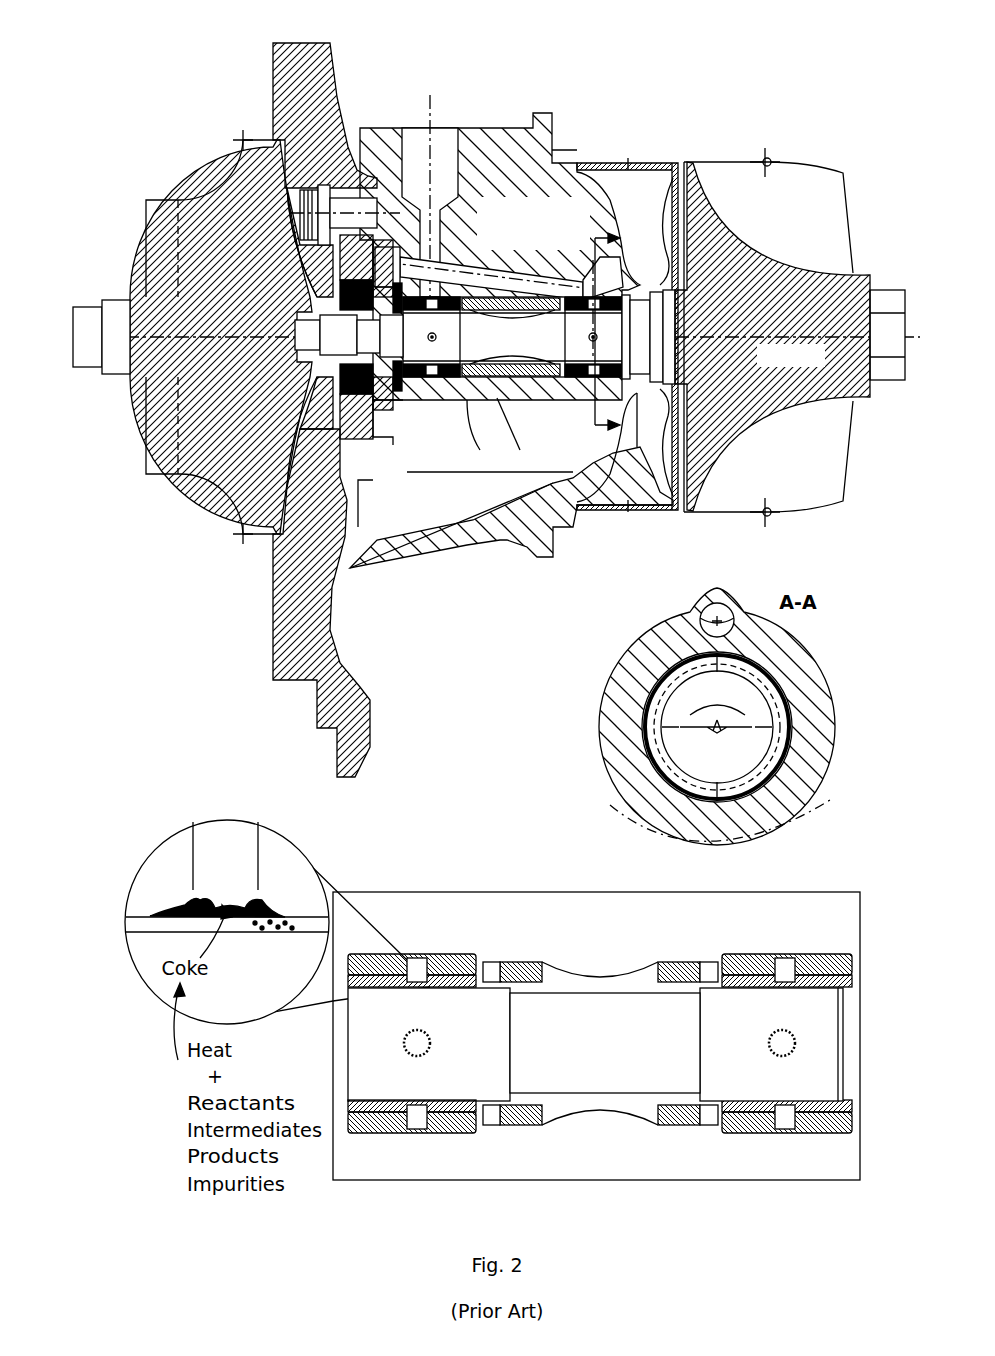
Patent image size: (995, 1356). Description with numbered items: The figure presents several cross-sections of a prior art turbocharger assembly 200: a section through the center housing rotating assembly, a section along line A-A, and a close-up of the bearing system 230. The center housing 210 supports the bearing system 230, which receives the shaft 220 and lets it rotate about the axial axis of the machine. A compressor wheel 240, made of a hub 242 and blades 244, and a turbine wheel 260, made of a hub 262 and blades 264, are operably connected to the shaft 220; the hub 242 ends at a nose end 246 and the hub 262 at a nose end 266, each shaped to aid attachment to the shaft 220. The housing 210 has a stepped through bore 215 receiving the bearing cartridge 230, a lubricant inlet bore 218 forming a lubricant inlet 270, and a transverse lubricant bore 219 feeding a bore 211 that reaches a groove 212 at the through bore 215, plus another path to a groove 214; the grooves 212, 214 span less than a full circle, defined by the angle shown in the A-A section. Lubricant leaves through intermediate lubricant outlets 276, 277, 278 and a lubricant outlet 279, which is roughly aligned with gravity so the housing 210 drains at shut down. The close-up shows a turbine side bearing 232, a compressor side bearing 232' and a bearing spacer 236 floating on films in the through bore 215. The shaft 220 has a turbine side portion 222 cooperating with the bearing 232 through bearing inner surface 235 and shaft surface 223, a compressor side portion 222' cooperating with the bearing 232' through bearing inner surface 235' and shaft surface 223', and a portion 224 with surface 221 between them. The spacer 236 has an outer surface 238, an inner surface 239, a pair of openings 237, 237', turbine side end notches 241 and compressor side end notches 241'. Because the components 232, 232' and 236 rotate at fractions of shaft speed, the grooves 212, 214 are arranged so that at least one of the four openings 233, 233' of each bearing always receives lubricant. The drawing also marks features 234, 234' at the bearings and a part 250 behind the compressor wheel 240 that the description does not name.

The turbocharger assembly 200 is at (204, 42).
The center housing 210 is at (498, 181).
The bore 211 is at (462, 232).
The groove 212 is at (462, 250).
The groove 214 is at (585, 257).
The through bore 215 is at (467, 430).
The lubricant inlet bore 218 is at (413, 171).
The transverse lubricant bore 219 is at (535, 273).
The shaft 220 is at (495, 348).
The surface 221 is at (587, 992).
The turbine side portion 222 is at (771, 1044).
The compressor side portion 222' is at (429, 1044).
The shaft surface 223 is at (666, 844).
The shaft surface 223' is at (334, 976).
The portion 224 is at (586, 1088).
The bearing system 230 is at (540, 410).
The turbine side bearing 232 is at (707, 882).
The compressor side bearing 232' is at (412, 1061).
The openings 233 is at (751, 940).
The openings 233' is at (462, 929).
The ball bearing element 234 is at (722, 777).
The ball bearing element 234' is at (474, 943).
The bearing inner surface 235 is at (708, 820).
The bearing inner surface 235' is at (321, 954).
The bearing spacer 236 is at (530, 1132).
The opening 237 is at (610, 956).
The opening 237' is at (601, 1134).
The outer surface 238 is at (538, 958).
The inner surface 239 is at (672, 985).
The turbine side end notches 241 is at (681, 1017).
The compressor side end notches 241' is at (510, 1068).
The compressor wheel 240 is at (185, 148).
The hub 242 is at (226, 311).
The blades 244 is at (191, 236).
The nose end 246 is at (88, 367).
The backplate 250 is at (272, 603).
The turbine wheel 260 is at (790, 112).
The hub 262 is at (770, 313).
The blades 264 is at (793, 239).
The nose end 266 is at (890, 290).
The lubricant inlet 270 is at (448, 106).
The intermediate lubricant outlet 276 is at (400, 405).
The intermediate lubricant outlet 277 is at (637, 448).
The intermediate lubricant outlet 278 is at (520, 450).
The lubricant outlet 279 is at (445, 572).